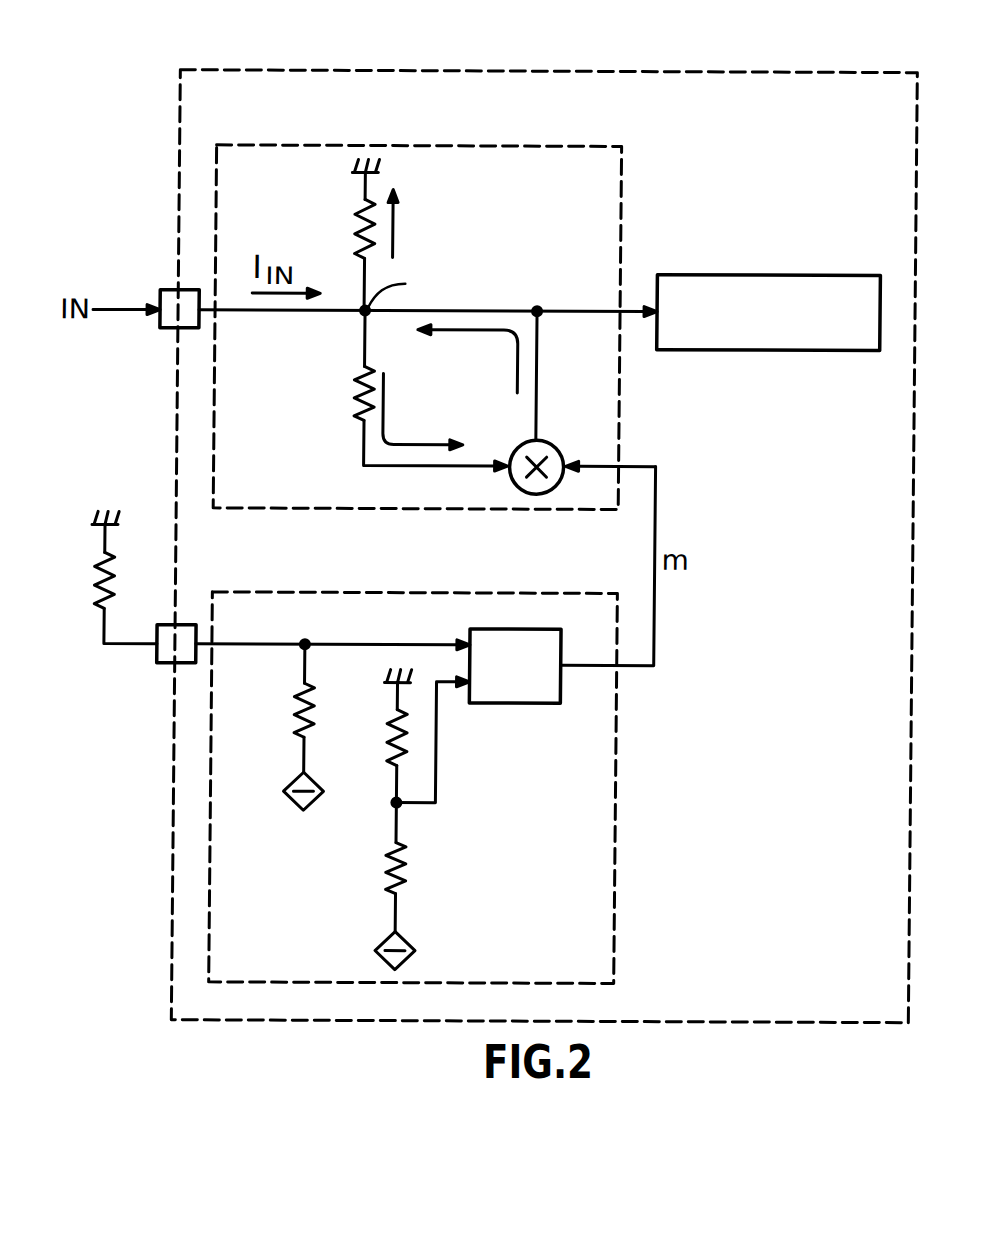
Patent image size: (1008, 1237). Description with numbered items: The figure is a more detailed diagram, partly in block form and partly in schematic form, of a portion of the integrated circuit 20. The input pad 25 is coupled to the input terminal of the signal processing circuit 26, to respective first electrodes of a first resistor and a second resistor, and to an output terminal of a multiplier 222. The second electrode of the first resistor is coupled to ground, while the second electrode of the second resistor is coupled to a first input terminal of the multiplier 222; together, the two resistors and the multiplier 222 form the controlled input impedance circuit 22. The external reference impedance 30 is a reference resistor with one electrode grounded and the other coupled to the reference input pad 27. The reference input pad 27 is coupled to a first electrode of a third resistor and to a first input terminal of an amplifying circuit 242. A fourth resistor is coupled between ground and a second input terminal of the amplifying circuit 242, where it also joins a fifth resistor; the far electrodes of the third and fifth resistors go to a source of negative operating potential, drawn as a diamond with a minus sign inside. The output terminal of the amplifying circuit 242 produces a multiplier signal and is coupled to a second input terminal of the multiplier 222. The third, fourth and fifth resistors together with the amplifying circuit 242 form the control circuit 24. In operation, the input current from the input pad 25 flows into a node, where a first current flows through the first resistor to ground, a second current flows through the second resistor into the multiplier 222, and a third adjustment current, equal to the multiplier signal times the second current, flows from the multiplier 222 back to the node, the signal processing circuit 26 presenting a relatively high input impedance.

The integrated circuit 20 is at (269, 69).
The controlled input impedance circuit 22 is at (534, 143).
The control circuit 24 is at (534, 590).
The input pad 25 is at (167, 289).
The signal processing circuit 26 is at (841, 272).
The reference input pad 27 is at (169, 664).
The external reference impedance 30 is at (117, 572).
The multiplier 222 is at (561, 445).
The amplifying circuit 242 is at (522, 703).